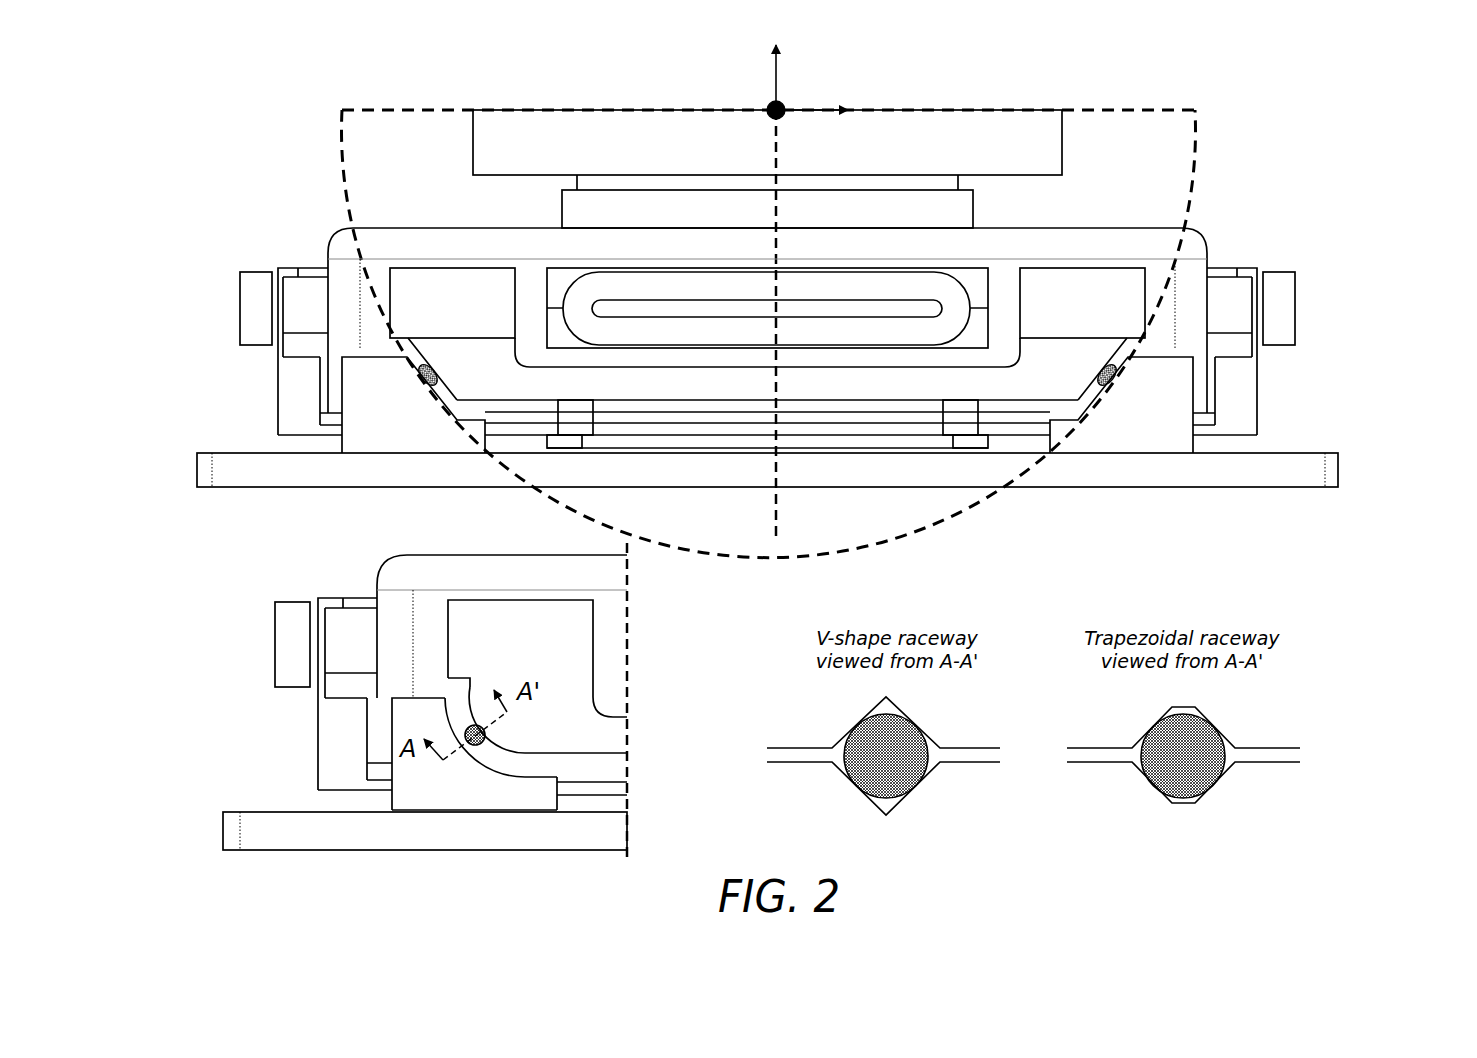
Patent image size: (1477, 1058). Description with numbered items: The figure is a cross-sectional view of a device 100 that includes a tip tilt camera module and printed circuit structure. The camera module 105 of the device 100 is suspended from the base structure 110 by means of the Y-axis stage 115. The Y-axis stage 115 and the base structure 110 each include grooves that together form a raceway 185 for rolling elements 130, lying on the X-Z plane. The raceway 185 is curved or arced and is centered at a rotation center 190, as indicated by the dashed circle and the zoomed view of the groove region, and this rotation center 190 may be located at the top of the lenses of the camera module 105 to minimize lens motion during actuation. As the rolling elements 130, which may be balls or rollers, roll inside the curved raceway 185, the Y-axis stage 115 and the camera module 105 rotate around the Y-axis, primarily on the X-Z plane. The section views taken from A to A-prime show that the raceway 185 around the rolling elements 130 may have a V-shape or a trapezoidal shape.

The device 100 is at (1306, 104).
The camera module 105 is at (1207, 242).
The base structure 110 is at (1310, 453).
The Y-axis stage 115 is at (767, 334).
The rolling elements 130 is at (1228, 716).
The raceway 185 is at (504, 762).
The rotation center 190 is at (767, 102).